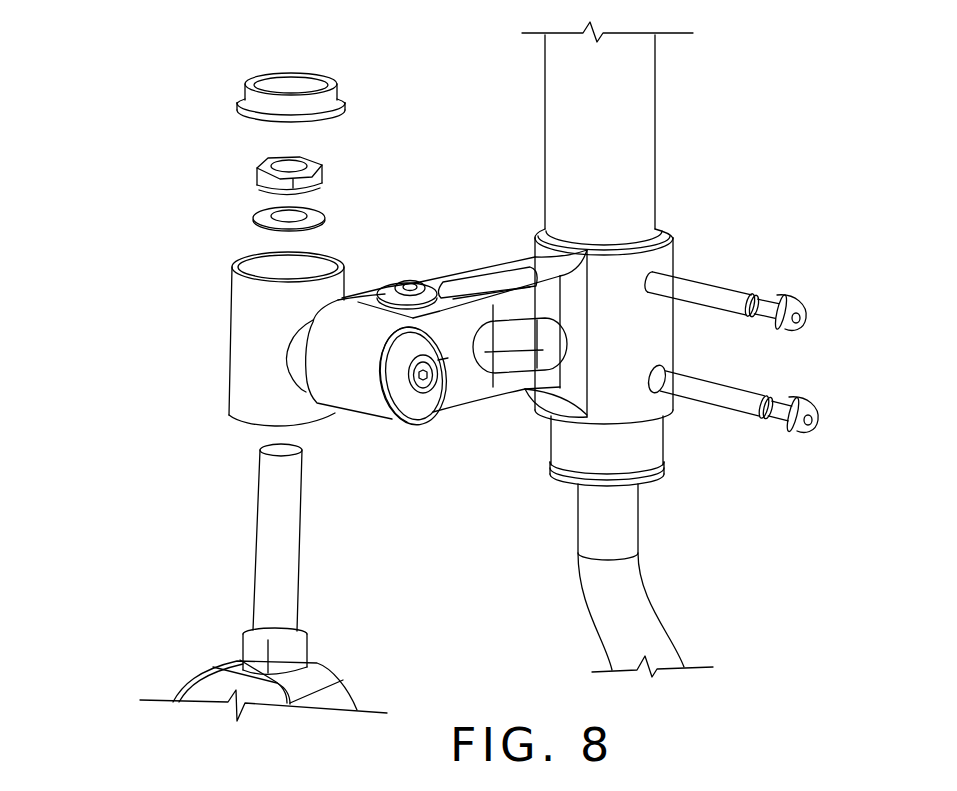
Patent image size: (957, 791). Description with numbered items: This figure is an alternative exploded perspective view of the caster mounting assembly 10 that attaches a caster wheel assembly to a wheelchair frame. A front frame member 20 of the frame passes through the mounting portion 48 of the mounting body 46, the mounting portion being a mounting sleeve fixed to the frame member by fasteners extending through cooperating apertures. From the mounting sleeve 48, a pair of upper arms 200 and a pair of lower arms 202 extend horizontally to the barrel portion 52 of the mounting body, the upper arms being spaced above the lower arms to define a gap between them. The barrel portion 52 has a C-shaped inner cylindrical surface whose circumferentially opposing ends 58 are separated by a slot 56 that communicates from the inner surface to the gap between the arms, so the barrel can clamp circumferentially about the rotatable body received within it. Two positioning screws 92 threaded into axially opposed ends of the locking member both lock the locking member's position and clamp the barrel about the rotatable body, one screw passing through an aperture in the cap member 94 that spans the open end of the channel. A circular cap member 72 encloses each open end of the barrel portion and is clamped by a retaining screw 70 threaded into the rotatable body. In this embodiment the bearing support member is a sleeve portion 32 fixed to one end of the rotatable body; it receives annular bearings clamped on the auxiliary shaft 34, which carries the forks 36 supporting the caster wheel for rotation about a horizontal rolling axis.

The caster mounting assembly 10 is at (120, 314).
The front frame member 20 is at (642, 107).
The sleeve portion 32 is at (245, 357).
The auxiliary shaft 34 is at (267, 557).
The forks 36 is at (343, 678).
The mounting body 46 is at (493, 183).
The mounting portion 48 is at (673, 250).
The barrel portion 52 is at (360, 402).
The slot 56 is at (448, 358).
The circumferentially opposing ends 58 is at (463, 330).
The retaining screws 70 is at (430, 384).
The cap member 72 is at (416, 402).
The positioning screws 92 is at (398, 283).
The cap member 94 is at (380, 288).
The upper arms 200 is at (483, 290).
The lower arms 202 is at (540, 415).